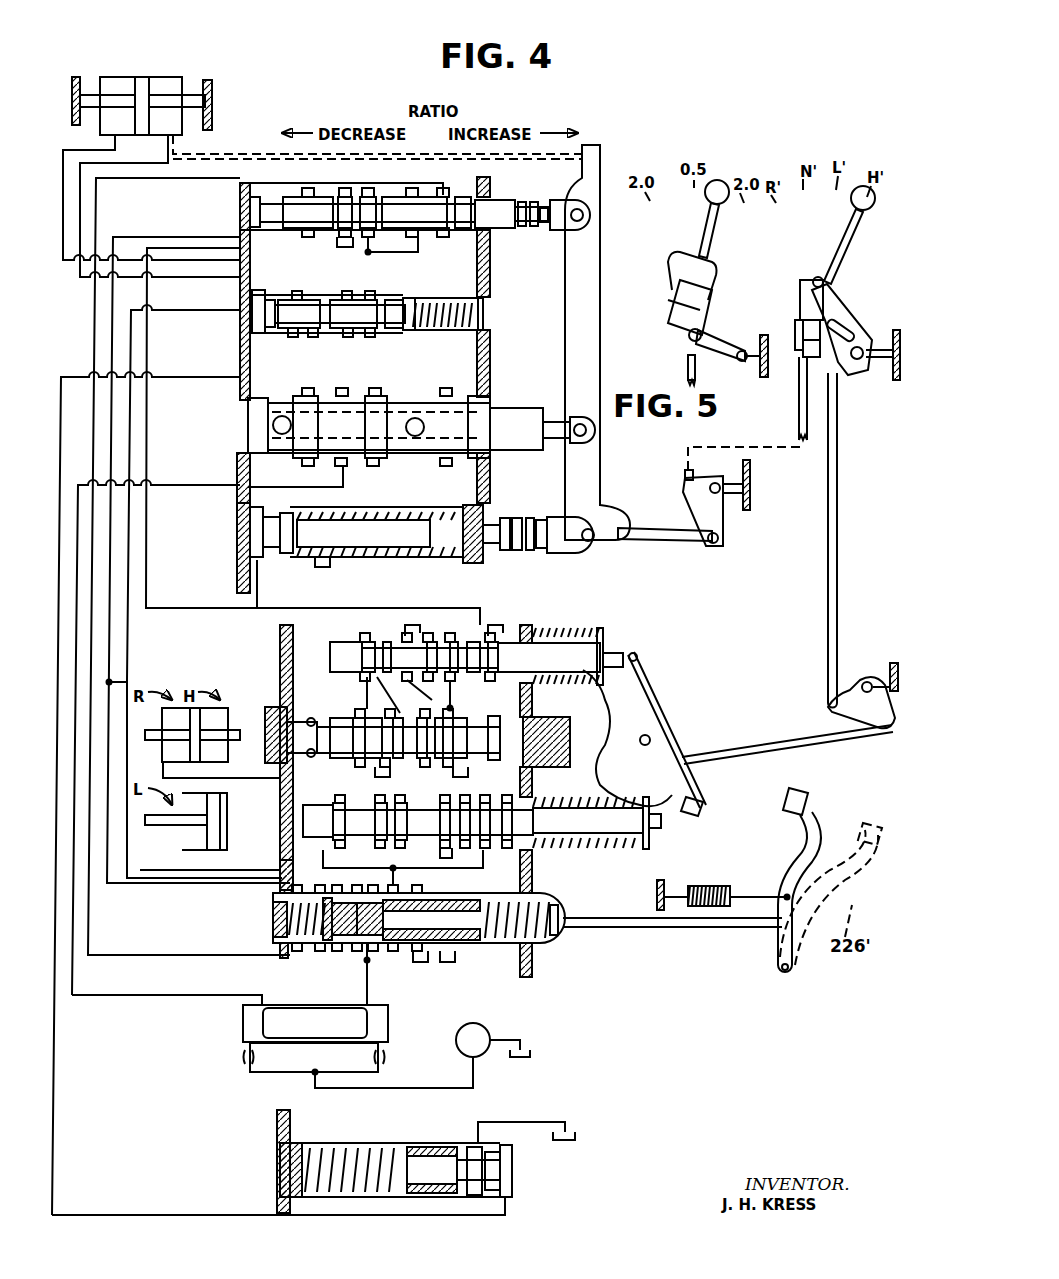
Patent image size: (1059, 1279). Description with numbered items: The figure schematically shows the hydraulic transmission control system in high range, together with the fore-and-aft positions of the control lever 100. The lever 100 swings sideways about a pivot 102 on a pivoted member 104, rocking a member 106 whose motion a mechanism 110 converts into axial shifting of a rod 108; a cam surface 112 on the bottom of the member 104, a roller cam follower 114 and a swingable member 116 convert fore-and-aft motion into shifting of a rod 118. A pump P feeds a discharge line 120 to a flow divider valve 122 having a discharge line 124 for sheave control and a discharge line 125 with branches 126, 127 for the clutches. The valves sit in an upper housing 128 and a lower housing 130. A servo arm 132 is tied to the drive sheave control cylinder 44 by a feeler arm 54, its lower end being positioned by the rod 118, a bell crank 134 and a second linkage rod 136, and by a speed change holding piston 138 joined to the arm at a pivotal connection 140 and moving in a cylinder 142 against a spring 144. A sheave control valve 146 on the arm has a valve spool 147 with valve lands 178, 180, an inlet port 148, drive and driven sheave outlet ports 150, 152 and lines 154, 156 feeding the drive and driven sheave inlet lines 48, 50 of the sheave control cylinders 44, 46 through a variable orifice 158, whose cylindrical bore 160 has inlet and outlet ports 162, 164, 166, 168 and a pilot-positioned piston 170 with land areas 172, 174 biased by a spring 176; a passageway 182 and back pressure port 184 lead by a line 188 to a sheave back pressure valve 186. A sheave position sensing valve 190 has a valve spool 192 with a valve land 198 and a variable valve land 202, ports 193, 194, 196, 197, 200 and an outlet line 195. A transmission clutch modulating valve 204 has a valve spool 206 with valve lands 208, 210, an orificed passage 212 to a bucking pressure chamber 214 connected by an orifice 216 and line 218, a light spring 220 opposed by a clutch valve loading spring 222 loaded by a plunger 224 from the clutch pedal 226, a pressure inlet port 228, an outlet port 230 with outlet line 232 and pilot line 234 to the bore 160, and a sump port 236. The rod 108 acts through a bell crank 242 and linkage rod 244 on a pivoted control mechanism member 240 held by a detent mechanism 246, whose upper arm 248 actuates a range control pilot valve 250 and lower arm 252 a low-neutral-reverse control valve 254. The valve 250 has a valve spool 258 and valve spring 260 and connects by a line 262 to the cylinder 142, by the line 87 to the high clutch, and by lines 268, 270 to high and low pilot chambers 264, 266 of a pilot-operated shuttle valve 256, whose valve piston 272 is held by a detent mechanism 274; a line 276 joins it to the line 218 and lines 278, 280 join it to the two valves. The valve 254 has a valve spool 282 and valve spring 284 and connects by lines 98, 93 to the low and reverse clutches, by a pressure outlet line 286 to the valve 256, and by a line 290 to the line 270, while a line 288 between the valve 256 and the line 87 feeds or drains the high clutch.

In FIG. 4, the drive sheave control cylinder 44 is at (166, 80).
In FIG. 4, the driven sheave control cylinder 46 is at (110, 80).
In FIG. 4, the drive sheave inlet line 48 is at (157, 162).
In FIG. 4, the driven sheave inlet line 50 is at (62, 172).
In FIG. 4, the feeler arm 54 is at (232, 152).
In FIG. 4, the high clutch line 87 is at (201, 734).
In FIG. 4, the reverse clutch line 93 is at (245, 778).
In FIG. 4, the low clutch line 98 is at (242, 852).
In FIG. 4, the control lever 100 is at (848, 236).
In FIG. 5, the control lever 100 is at (720, 226).
In FIG. 4, the pivot 102 is at (817, 277).
In FIG. 5, the pivot 102 is at (670, 280).
In FIG. 4, the pivoted member 104 is at (800, 300).
In FIG. 5, the pivoted member 104 is at (693, 305).
In FIG. 4, the rocking member 106 is at (842, 285).
In FIG. 4, the rod 108 is at (838, 488).
In FIG. 4, the mechanism 110 is at (853, 373).
In FIG. 4, the cam surface 112 is at (803, 325).
In FIG. 5, the cam surface 112 is at (665, 305).
In FIG. 4, the cam follower 114 is at (803, 348).
In FIG. 5, the cam follower 114 is at (688, 338).
In FIG. 4, the swingable member 116 is at (803, 355).
In FIG. 5, the swingable member 116 is at (720, 345).
In FIG. 4, the rod 118 is at (798, 408).
In FIG. 5, the rod 118 is at (688, 372).
In FIG. 4, the discharge line 120 is at (403, 1092).
In FIG. 4, the flow divider valve 122 is at (240, 1050).
In FIG. 4, the discharge line 124 is at (126, 997).
In FIG. 4, the discharge line 125 is at (367, 996).
In FIG. 4, the branch line 126 is at (176, 953).
In FIG. 4, the branch line 127 is at (364, 960).
In FIG. 4, the upper housing 128 is at (490, 365).
In FIG. 4, the lower housing 130 is at (532, 880).
In FIG. 4, the servo arm 132 is at (563, 270).
In FIG. 4, the bell crank 134 is at (722, 517).
In FIG. 4, the second linkage rod 136 is at (690, 541).
In FIG. 4, the speed change holding piston 138 is at (377, 547).
In FIG. 4, the pivotal connection 140 is at (600, 538).
In FIG. 4, the cylinder 142 is at (262, 542).
In FIG. 4, the spring 144 is at (420, 552).
In FIG. 4, the sheave control valve 146 is at (510, 458).
In FIG. 4, the valve spool 147 is at (467, 420).
In FIG. 4, the inlet port 148 is at (343, 466).
In FIG. 4, the drive sheave outlet port 150 is at (305, 466).
In FIG. 4, the driven sheave outlet port 152 is at (375, 466).
In FIG. 4, the drive sheave line 154 is at (312, 340).
In FIG. 4, the driven sheave line 156 is at (375, 337).
In FIG. 4, the sheave control variable orifice 158 is at (490, 304).
In FIG. 4, the cylindrical bore 160 is at (250, 335).
In FIG. 4, the drive sheave inlet port 162 is at (320, 330).
In FIG. 4, the drive sheave outlet port 164 is at (280, 337).
In FIG. 4, the driven sheave inlet port 166 is at (370, 291).
In FIG. 4, the driven sheave outlet port 168 is at (347, 291).
In FIG. 4, the pilot-positioned piston 170 is at (252, 320).
In FIG. 4, the land area 172 is at (313, 300).
In FIG. 4, the land area 174 is at (355, 337).
In FIG. 4, the spring 176 is at (483, 322).
In FIG. 4, the valve land 178 is at (300, 448).
In FIG. 4, the valve land 180 is at (378, 458).
In FIG. 4, the passageway 182 is at (397, 412).
In FIG. 4, the back pressure port 184 is at (445, 466).
In FIG. 4, the sheave back pressure valve 186 is at (519, 1170).
In FIG. 4, the line 188 is at (173, 380).
In FIG. 4, the sheave position sensing valve 190 is at (236, 208).
In FIG. 4, the valve spool 192 is at (496, 203).
In FIG. 4, the first inlet port 193 is at (443, 237).
In FIG. 4, the outlet port 194 is at (415, 237).
In FIG. 4, the outlet line 195 is at (147, 522).
In FIG. 4, the second port 196 is at (368, 188).
In FIG. 4, the sump port 197 is at (345, 188).
In FIG. 4, the valve land 198 is at (421, 225).
In FIG. 4, the second inlet port 200 is at (306, 188).
In FIG. 4, the variable valve land 202 is at (323, 225).
In FIG. 4, the transmission clutch modulating valve 204 is at (567, 958).
In FIG. 4, the valve spool 206 is at (431, 920).
In FIG. 4, the valve land 208 is at (440, 900).
In FIG. 4, the valve land 210 is at (330, 902).
In FIG. 4, the orificed passage 212 is at (380, 944).
In FIG. 4, the bucking pressure chamber 214 is at (287, 933).
In FIG. 4, the orifice 216 is at (338, 868).
In FIG. 4, the line 218 is at (123, 884).
In FIG. 4, the spring 220 is at (287, 915).
In FIG. 4, the clutch valve loading spring 222 is at (562, 910).
In FIG. 4, the plunger 224 is at (540, 948).
In FIG. 4, the clutch pedal 226 is at (803, 873).
In FIG. 4, the pressure inlet port 228 is at (370, 962).
In FIG. 4, the outlet port 230 is at (398, 906).
In FIG. 4, the outlet line 232 is at (427, 854).
In FIG. 4, the pilot line 234 is at (130, 636).
In FIG. 4, the sump port 236 is at (430, 962).
In FIG. 4, the pivoted control mechanism member 240 is at (652, 712).
In FIG. 4, the bell crank 242 is at (848, 685).
In FIG. 4, the linkage rod 244 is at (760, 750).
In FIG. 4, the detent mechanism 246 is at (575, 733).
In FIG. 4, the upper arm 248 is at (638, 658).
In FIG. 4, the range control pilot valve 250 is at (530, 614).
In FIG. 4, the lower arm 252 is at (700, 802).
In FIG. 4, the low-neutral-reverse control valve 254 is at (535, 850).
In FIG. 4, the pilot-operated shuttle valve 256 is at (480, 766).
In FIG. 4, the valve spool 258 is at (330, 652).
In FIG. 4, the valve spring 260 is at (593, 630).
In FIG. 4, the line 262 is at (259, 590).
In FIG. 4, the high pilot chamber 264 is at (530, 770).
In FIG. 4, the low pilot chamber 266 is at (275, 760).
In FIG. 4, the line 268 is at (490, 673).
In FIG. 4, the line 270 is at (482, 677).
In FIG. 4, the valve piston 272 is at (345, 742).
In FIG. 4, the detent mechanism 274 is at (282, 680).
In FIG. 4, the line 276 is at (173, 675).
In FIG. 4, the line 278 is at (312, 718).
In FIG. 4, the line 280 is at (397, 785).
In FIG. 4, the valve spool 282 is at (590, 831).
In FIG. 4, the valve spring 284 is at (660, 830).
In FIG. 4, the pressure outlet line 286 is at (450, 756).
In FIG. 4, the line 288 is at (423, 628).
In FIG. 4, the line 290 is at (520, 712).